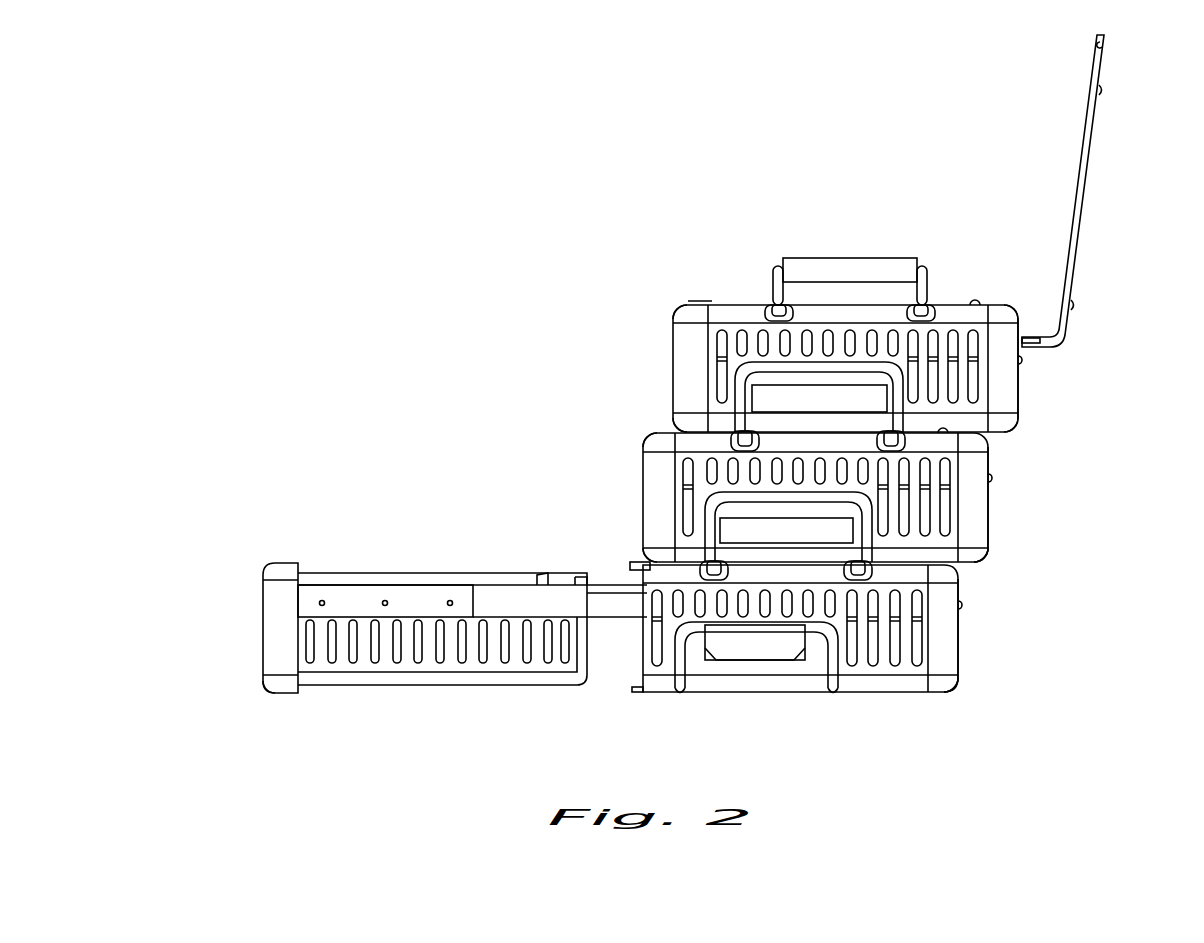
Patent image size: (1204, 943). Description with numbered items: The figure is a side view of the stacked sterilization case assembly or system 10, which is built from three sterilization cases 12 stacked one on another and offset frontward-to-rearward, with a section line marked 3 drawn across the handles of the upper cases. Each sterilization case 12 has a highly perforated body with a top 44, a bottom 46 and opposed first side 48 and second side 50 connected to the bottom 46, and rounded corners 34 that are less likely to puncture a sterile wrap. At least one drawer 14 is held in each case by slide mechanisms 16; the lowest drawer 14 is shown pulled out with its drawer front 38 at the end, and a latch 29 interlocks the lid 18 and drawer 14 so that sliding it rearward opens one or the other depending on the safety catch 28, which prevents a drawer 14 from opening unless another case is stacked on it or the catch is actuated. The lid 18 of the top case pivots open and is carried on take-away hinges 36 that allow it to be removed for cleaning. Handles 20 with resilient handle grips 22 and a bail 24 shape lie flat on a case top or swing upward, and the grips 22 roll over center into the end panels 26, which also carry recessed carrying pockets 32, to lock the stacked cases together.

The stacked sterilization case assembly 10 is at (490, 228).
The sterilization case 12 is at (1005, 385).
The drawer 14 is at (430, 678).
The slide mechanism 16 is at (343, 600).
The lid 18 is at (1088, 135).
The handle 20 is at (749, 358).
The handle grip 22 is at (893, 260).
The bail 24 is at (773, 280).
The end panel 26 is at (967, 402).
The safety catch 28 is at (975, 304).
The latch 29 is at (635, 565).
The recessed carrying pocket 32 is at (835, 378).
The rounded corner 34 is at (688, 300).
The take-away hinge 36 is at (1038, 340).
The drawer front 38 is at (432, 490).
The top 44 is at (732, 305).
The bottom 46 is at (1000, 425).
The first side 48 is at (673, 340).
The second side 50 is at (1022, 365).
The section line 3 is at (802, 215).